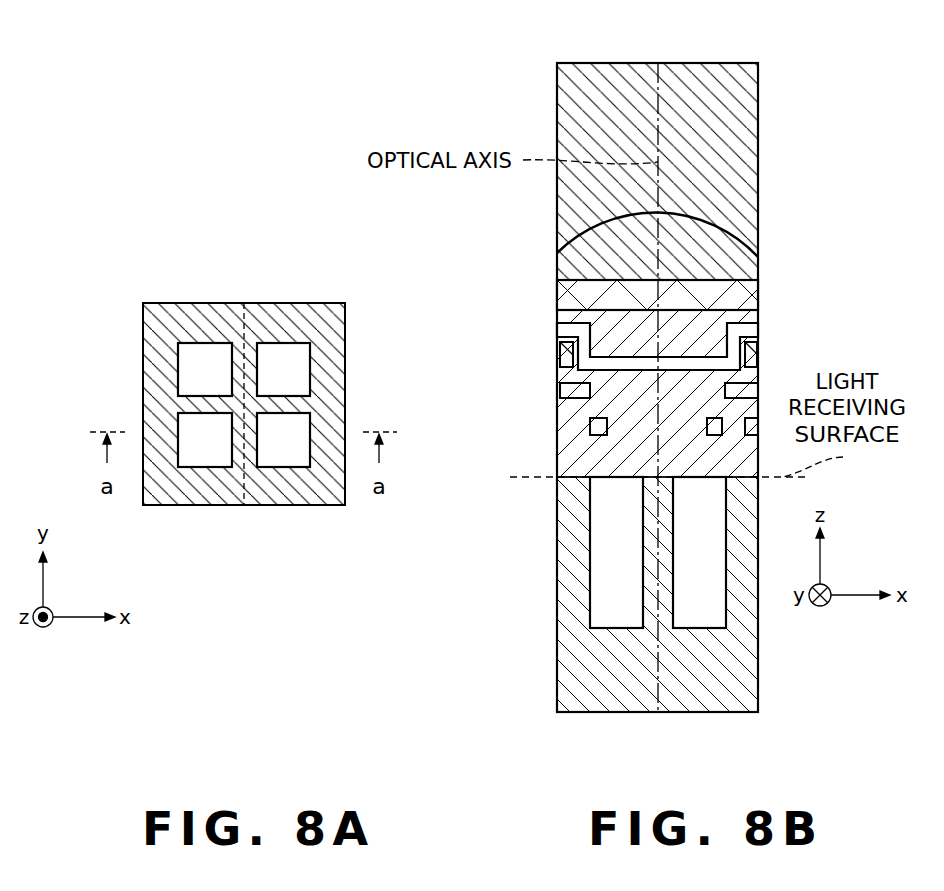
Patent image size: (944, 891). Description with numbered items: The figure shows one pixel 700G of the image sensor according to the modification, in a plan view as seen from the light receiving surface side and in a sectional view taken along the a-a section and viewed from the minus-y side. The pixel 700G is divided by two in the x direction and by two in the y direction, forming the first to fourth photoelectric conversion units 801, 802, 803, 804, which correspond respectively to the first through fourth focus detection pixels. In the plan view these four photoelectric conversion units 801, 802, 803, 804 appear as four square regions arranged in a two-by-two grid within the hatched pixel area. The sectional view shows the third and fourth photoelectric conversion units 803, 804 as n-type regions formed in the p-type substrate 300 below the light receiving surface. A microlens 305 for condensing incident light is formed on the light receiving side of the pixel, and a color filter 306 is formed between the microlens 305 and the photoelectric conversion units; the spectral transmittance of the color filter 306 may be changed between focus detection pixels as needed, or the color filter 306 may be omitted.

In FIG. 8A, the pixel 700G is at (244, 422).
In FIG. 8A, the first photoelectric conversion unit 801 is at (200, 357).
In FIG. 8A, the second photoelectric conversion unit 802 is at (285, 357).
In FIG. 8A, the third photoelectric conversion unit 803 is at (200, 452).
In FIG. 8B, the third photoelectric conversion unit 803 is at (607, 603).
In FIG. 8A, the fourth photoelectric conversion unit 804 is at (283, 452).
In FIG. 8B, the fourth photoelectric conversion unit 804 is at (705, 618).
In FIG. 8B, the semiconductor substrate 300 is at (587, 683).
In FIG. 8B, the microlens 305 is at (733, 241).
In FIG. 8B, the color filter 306 is at (747, 297).